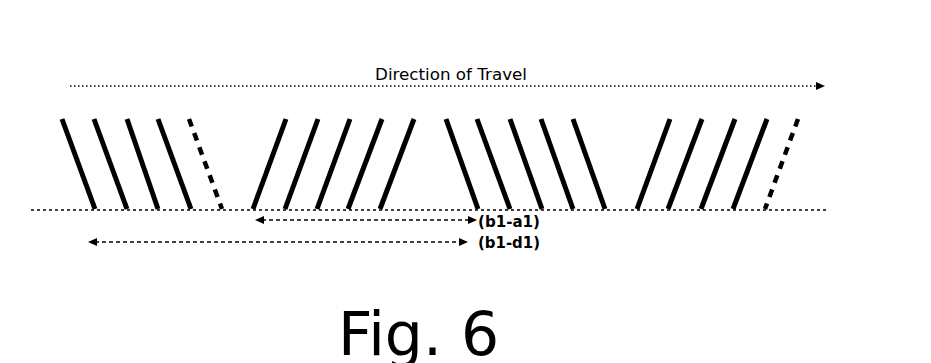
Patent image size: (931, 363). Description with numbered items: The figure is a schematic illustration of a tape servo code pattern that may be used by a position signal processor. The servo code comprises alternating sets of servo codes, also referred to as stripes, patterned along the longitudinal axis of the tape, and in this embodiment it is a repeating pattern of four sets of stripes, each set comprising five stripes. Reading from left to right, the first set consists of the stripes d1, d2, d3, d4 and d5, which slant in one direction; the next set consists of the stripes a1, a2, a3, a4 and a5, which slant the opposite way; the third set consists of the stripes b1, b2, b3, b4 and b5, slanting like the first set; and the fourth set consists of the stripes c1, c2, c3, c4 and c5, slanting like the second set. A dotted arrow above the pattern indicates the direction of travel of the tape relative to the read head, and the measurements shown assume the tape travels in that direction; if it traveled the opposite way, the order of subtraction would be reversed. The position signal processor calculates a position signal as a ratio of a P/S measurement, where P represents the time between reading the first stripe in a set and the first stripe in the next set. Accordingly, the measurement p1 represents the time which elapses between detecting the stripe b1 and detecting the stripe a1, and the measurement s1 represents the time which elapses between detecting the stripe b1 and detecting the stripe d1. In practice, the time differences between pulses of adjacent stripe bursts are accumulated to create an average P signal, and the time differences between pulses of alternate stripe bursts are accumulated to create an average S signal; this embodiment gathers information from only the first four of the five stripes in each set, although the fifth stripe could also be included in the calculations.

The stripe d1 is at (69, 150).
The stripe d2 is at (99, 150).
The stripe d3 is at (128, 150).
The stripe d4 is at (159, 150).
The stripe d5 is at (189, 150).
The stripe a1 is at (278, 155).
The stripe a2 is at (307, 155).
The stripe a3 is at (337, 155).
The stripe a4 is at (366, 155).
The stripe a5 is at (397, 155).
The stripe b1 is at (462, 155).
The stripe b2 is at (493, 155).
The stripe b3 is at (523, 155).
The stripe b4 is at (553, 155).
The stripe b5 is at (583, 155).
The stripe c1 is at (667, 155).
The stripe c2 is at (696, 155).
The stripe c3 is at (726, 155).
The stripe c4 is at (755, 155).
The stripe c5 is at (785, 155).
The measurement p1 is at (366, 221).
The measurement s1 is at (278, 243).